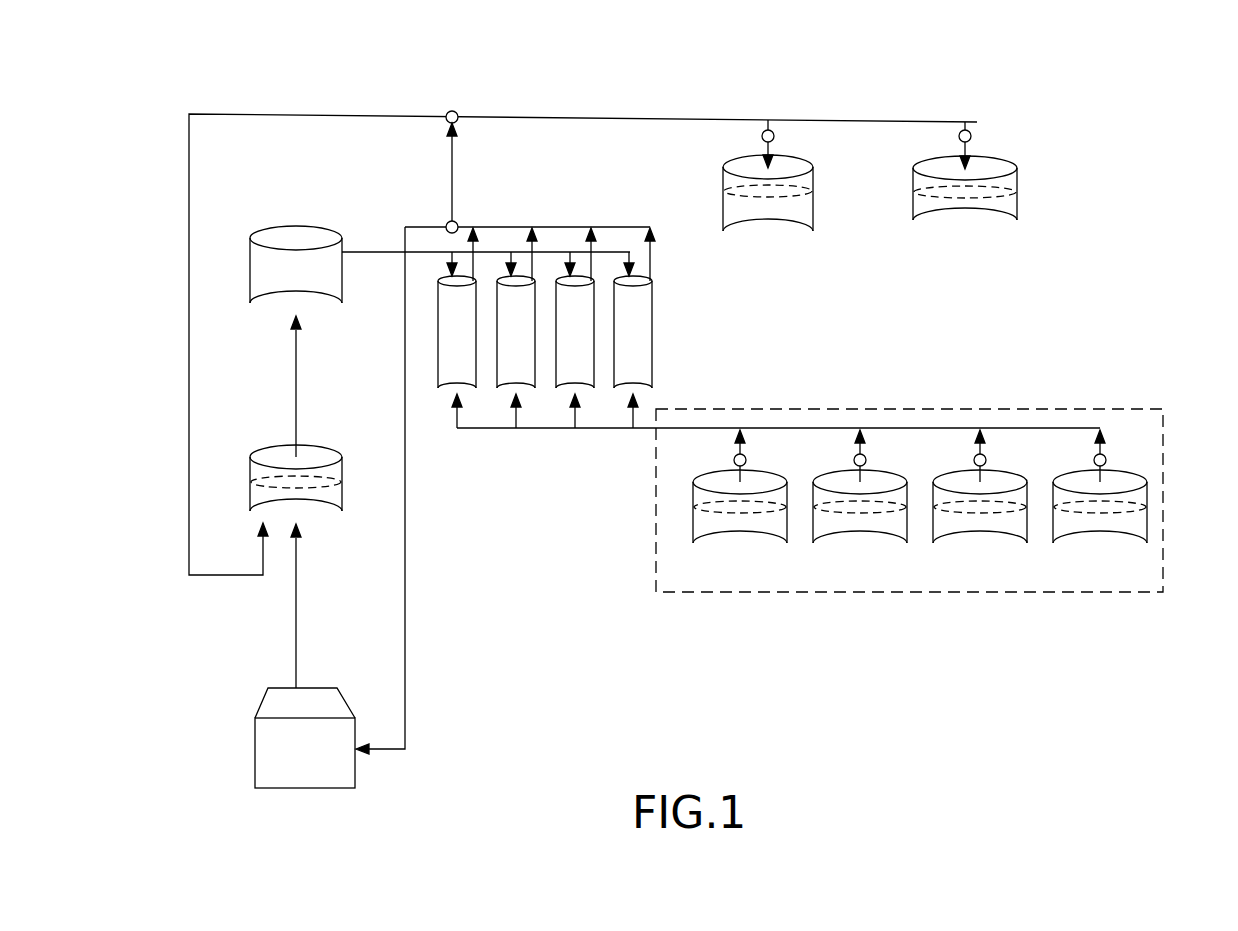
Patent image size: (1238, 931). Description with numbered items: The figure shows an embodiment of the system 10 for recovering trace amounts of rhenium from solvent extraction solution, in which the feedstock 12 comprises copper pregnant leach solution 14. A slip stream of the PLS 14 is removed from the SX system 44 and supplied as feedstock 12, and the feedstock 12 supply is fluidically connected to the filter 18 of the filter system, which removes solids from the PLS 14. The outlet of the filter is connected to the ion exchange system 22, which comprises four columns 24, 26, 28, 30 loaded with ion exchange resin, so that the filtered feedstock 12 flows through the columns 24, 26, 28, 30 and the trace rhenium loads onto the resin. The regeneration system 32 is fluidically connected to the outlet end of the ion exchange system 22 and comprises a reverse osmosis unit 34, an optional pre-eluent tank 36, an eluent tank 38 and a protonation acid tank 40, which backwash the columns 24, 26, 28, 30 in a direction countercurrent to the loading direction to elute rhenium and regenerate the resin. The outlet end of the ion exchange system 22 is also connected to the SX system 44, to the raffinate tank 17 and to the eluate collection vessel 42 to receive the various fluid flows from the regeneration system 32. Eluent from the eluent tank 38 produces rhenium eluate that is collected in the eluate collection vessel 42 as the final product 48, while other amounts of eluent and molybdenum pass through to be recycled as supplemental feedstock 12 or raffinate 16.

The system 10 is at (261, 71).
The feedstock 12 is at (314, 449).
The copper pregnant leach solution 14 is at (312, 512).
The copper raffinate 16 is at (784, 226).
The raffinate tank 17 is at (793, 175).
The filter 18 is at (250, 258).
The ion exchange system 22 is at (573, 328).
The column 24 is at (469, 346).
The column 26 is at (528, 346).
The column 28 is at (587, 346).
The column 30 is at (645, 346).
The regeneration system 32 is at (932, 500).
The reverse osmosis unit 34 is at (701, 553).
The pre-eluent tank 36 is at (821, 553).
The eluent tank 38 is at (941, 553).
The protonation acid tank 40 is at (1061, 553).
The eluate collection vessel 42 is at (1017, 214).
The SX system 44 is at (255, 740).
The final product 48 is at (1040, 180).